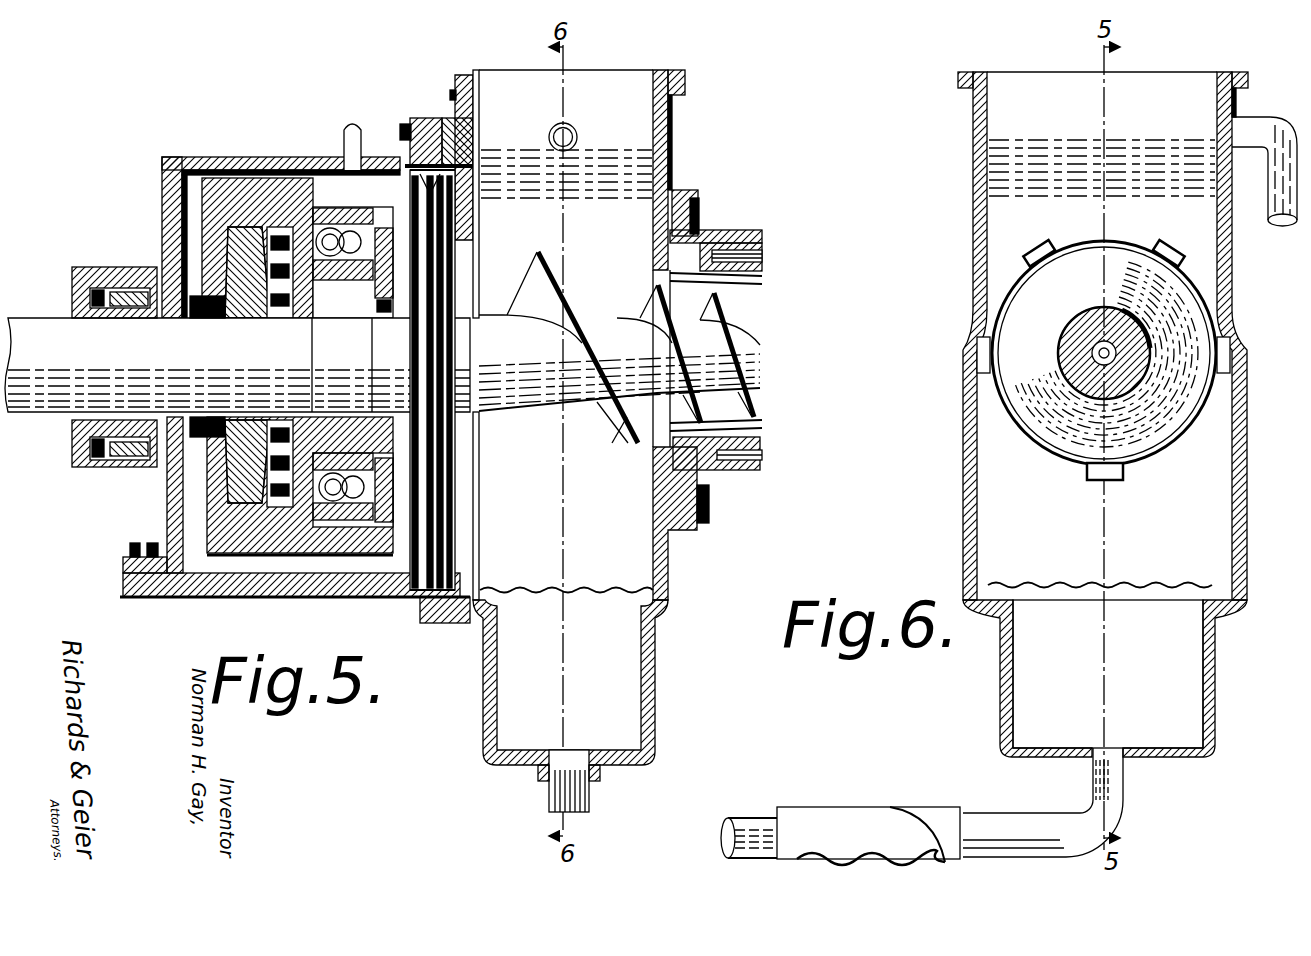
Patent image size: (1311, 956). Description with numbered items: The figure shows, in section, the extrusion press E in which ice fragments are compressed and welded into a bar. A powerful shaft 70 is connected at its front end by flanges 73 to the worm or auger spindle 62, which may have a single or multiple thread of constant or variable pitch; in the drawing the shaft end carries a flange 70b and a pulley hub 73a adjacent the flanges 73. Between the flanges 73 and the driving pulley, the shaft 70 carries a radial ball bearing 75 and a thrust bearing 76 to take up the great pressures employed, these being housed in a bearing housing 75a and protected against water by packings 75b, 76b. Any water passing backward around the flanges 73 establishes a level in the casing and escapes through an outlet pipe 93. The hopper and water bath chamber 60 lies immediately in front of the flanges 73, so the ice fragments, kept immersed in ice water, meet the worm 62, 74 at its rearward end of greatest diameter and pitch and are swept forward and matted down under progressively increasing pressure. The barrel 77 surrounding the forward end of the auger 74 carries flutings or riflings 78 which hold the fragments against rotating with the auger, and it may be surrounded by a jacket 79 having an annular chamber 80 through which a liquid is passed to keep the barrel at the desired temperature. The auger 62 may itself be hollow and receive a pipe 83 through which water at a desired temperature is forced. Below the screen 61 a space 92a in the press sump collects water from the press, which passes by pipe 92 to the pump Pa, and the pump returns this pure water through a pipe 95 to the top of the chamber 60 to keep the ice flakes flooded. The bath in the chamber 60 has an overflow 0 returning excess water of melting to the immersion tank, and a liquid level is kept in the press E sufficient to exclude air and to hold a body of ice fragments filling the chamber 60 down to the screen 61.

In FIG. 5, the hopper and water bath chamber 60 is at (668, 165).
In FIG. 6, the hopper and water bath chamber 60 is at (973, 188).
In FIG. 5, the screen 61 is at (600, 586).
In FIG. 6, the screen 61 is at (1172, 582).
In FIG. 5, the auger spindle 62 is at (619, 347).
In FIG. 6, the auger spindle 62 is at (1140, 358).
In FIG. 5, the shaft 70 is at (237, 365).
In FIG. 5, the shaft flange 70b is at (125, 254).
In FIG. 5, the flanges 73 is at (472, 462).
In FIG. 5, the pulley hub 73a is at (418, 162).
In FIG. 5, the auger 74 is at (627, 417).
In FIG. 6, the auger 74 is at (1190, 306).
In FIG. 5, the radial ball bearing 75 is at (340, 262).
In FIG. 5, the bearing housing 75a is at (218, 186).
In FIG. 5, the packing 75b is at (380, 292).
In FIG. 5, the thrust bearing 76 is at (255, 318).
In FIG. 5, the packing 76b is at (194, 318).
In FIG. 5, the barrel 77 is at (762, 236).
In FIG. 6, the flutings or riflings 78 is at (1000, 290).
In FIG. 5, the jacket 79 is at (720, 231).
In FIG. 5, the annular chamber 80 is at (766, 256).
In FIG. 6, the pipe 83 is at (1095, 345).
In FIG. 5, the pipe 92 is at (592, 803).
In FIG. 6, the pipe 92 is at (1128, 800).
In FIG. 5, the space 92a is at (626, 668).
In FIG. 6, the space 92a is at (1185, 642).
In FIG. 5, the outlet pipe 93 is at (353, 122).
In FIG. 6, the pipe 95 is at (745, 828).
In FIG. 5, the overflow 0 is at (576, 128).
In FIG. 6, the overflow 0 is at (1268, 128).
In FIG. 5, the extrusion press E is at (672, 72).
In FIG. 6, the extrusion press E is at (958, 80).
In FIG. 6, the pump Pa is at (860, 825).